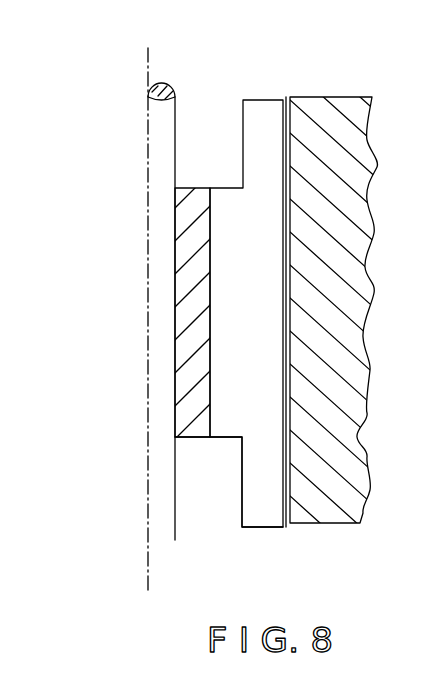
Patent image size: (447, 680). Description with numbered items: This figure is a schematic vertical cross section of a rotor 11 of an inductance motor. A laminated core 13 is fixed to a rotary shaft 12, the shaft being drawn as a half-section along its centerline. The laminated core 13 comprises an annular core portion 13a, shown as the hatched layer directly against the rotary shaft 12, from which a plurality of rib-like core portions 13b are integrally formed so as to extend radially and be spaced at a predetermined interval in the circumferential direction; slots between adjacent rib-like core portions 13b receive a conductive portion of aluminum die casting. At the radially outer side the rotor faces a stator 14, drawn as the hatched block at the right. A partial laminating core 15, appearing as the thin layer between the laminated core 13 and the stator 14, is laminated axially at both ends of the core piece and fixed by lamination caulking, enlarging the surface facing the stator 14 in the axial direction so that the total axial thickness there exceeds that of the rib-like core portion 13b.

The rotor 11 is at (210, 100).
The rotary shaft 12 is at (162, 318).
The laminated core 13 is at (257, 282).
The annular core portion 13a is at (195, 261).
The rib-like core portion 13b is at (222, 440).
The stator 14 is at (343, 282).
The partial laminating core 15 is at (267, 116).